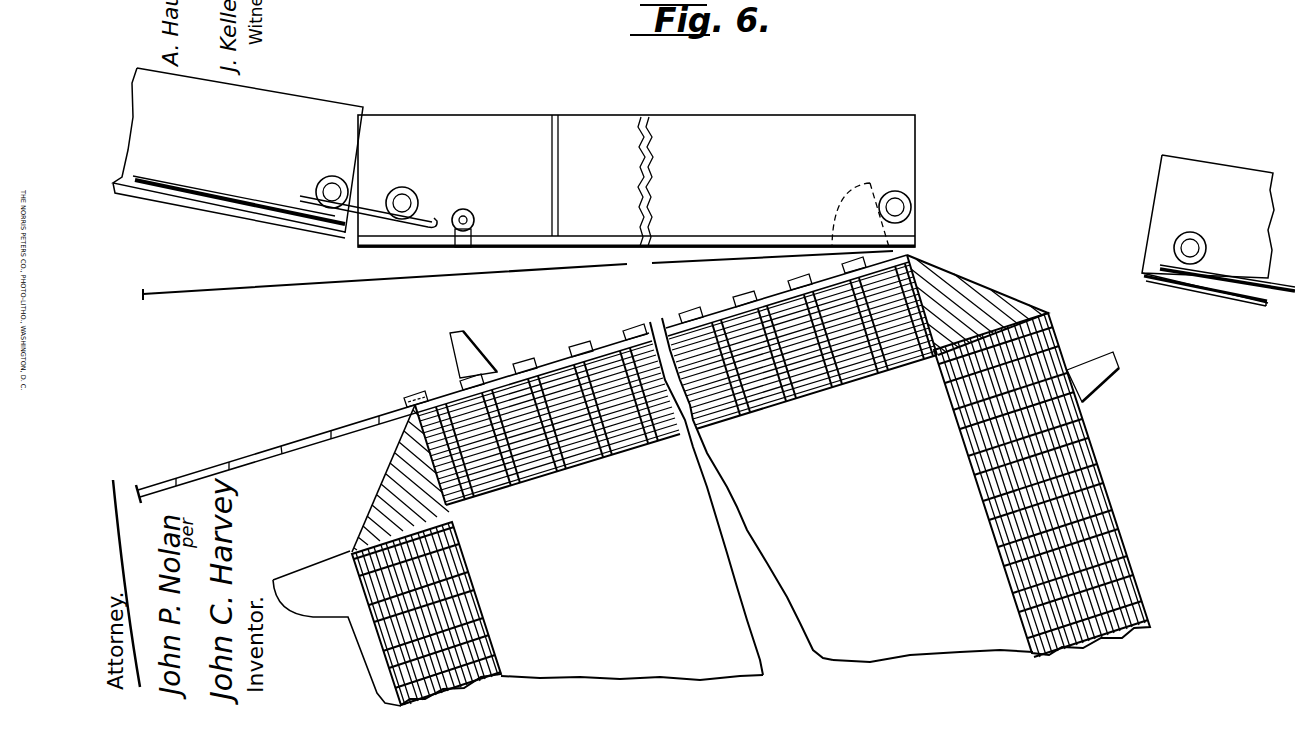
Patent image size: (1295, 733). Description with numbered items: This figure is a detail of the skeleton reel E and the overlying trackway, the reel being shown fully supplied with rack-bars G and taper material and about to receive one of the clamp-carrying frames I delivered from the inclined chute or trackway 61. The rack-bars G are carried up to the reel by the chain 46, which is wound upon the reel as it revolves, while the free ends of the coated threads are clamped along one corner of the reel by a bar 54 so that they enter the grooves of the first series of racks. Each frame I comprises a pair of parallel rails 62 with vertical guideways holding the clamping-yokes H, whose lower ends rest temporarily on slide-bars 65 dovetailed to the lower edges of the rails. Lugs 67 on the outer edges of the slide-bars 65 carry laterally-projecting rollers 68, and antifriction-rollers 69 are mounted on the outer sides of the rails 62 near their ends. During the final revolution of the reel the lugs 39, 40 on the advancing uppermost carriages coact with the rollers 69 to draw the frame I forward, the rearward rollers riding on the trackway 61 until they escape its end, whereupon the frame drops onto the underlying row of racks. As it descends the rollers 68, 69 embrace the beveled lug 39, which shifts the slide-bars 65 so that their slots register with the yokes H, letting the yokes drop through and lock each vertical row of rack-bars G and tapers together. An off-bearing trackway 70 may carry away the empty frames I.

The lug 39 is at (478, 343).
The lug 40 is at (849, 216).
The chain 46 is at (350, 420).
The bar 54 is at (933, 353).
The inclined chute or trackway 61 is at (268, 197).
The parallel rails 62 is at (240, 177).
The slide-bars 65 is at (193, 203).
The lugs 67 is at (330, 183).
The rollers 68 is at (467, 215).
The antifriction-rollers 69 is at (320, 202).
The off-bearing trackway 70 is at (1237, 283).
The skeleton reel E is at (767, 499).
The rack-bars G is at (575, 350).
The clamping-yokes H is at (1133, 447).
The frames I is at (298, 100).